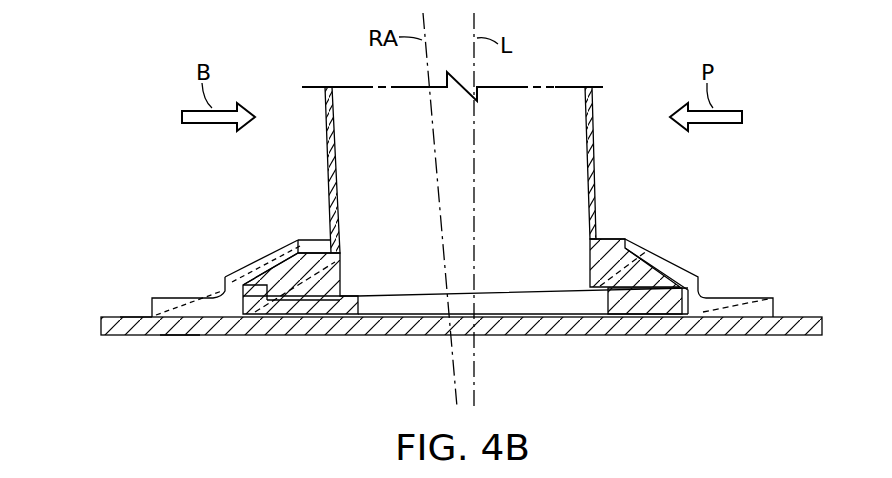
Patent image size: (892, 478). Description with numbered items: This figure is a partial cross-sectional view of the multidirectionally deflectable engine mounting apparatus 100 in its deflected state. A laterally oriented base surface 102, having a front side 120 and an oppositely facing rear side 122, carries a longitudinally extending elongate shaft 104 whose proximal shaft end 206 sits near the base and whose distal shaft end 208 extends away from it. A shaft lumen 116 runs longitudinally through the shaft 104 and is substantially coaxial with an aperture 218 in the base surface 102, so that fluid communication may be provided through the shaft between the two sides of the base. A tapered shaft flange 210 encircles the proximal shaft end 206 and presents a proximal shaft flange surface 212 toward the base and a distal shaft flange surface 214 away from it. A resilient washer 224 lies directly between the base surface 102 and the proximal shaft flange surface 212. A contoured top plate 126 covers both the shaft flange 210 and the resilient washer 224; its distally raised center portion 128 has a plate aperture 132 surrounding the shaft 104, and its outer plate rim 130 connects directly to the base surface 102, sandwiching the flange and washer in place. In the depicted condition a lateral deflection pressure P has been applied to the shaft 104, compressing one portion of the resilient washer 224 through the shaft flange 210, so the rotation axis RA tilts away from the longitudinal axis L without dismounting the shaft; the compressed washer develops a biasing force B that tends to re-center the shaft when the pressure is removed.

The multidirectionally deflectable engine mounting apparatus 100 is at (110, 58).
The base surface 102 is at (102, 307).
The elongate shaft 104 is at (330, 152).
The shaft lumen 116 is at (405, 167).
The front side 120 is at (126, 314).
The rear side 122 is at (181, 336).
The contoured top plate 126 is at (195, 226).
The center portion 128 is at (230, 272).
The outer plate rim 130 is at (198, 298).
The plate aperture 132 is at (322, 247).
The proximal shaft end 206 is at (657, 225).
The distal shaft end 208 is at (314, 86).
The shaft flange 210 is at (640, 280).
The proximal shaft flange surface 212 is at (292, 316).
The distal shaft flange surface 214 is at (278, 258).
The aperture 218 is at (403, 326).
The resilient washer 224 is at (668, 308).